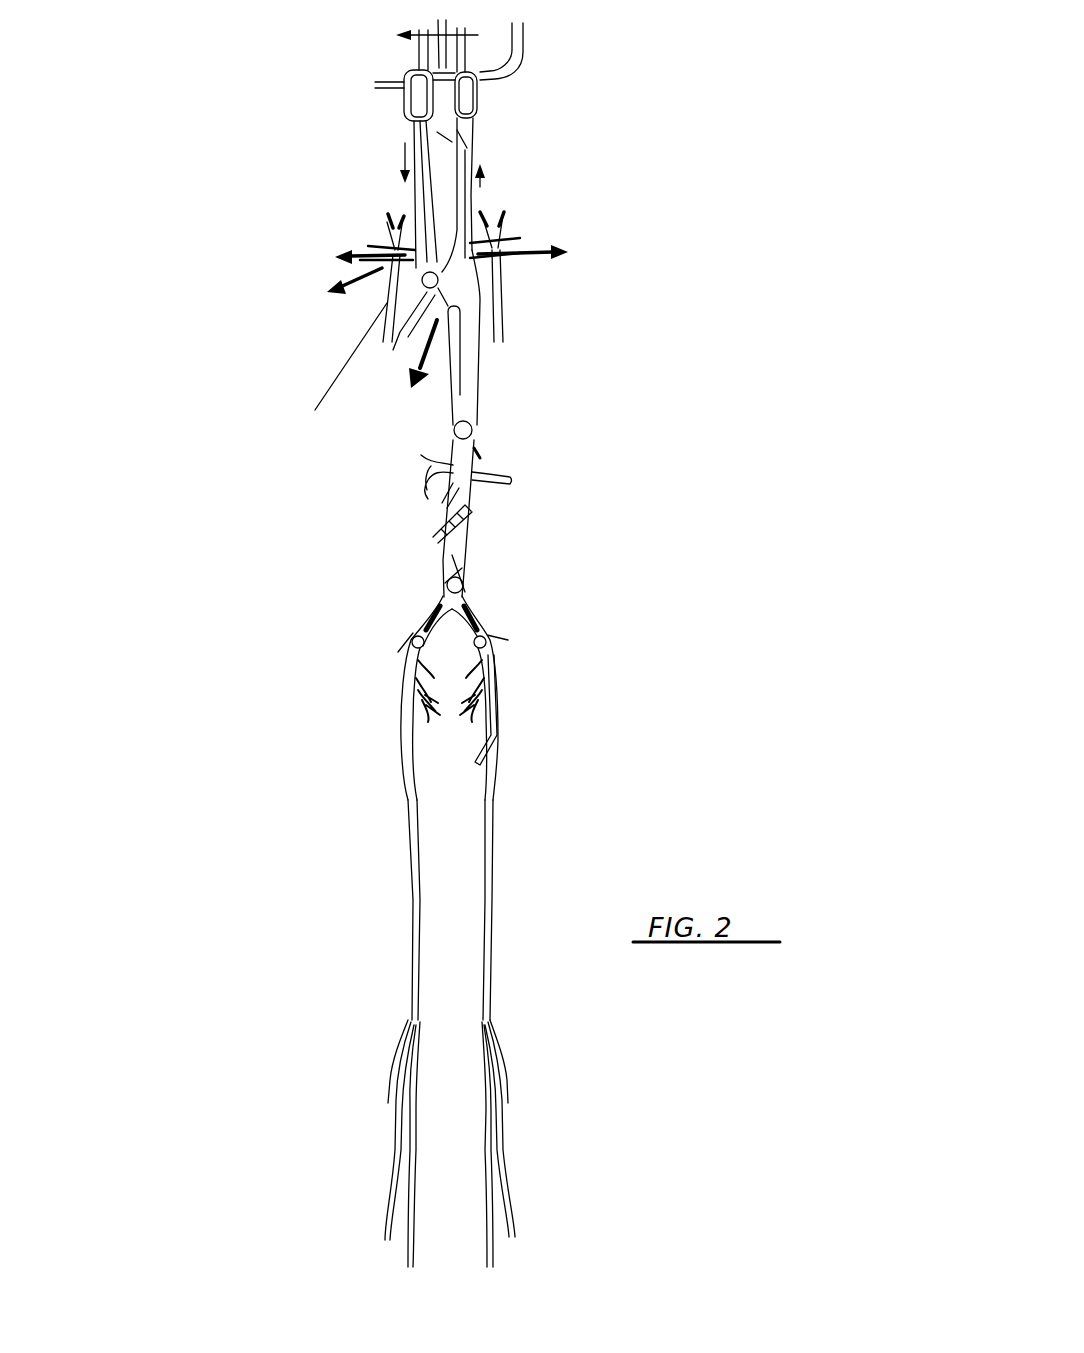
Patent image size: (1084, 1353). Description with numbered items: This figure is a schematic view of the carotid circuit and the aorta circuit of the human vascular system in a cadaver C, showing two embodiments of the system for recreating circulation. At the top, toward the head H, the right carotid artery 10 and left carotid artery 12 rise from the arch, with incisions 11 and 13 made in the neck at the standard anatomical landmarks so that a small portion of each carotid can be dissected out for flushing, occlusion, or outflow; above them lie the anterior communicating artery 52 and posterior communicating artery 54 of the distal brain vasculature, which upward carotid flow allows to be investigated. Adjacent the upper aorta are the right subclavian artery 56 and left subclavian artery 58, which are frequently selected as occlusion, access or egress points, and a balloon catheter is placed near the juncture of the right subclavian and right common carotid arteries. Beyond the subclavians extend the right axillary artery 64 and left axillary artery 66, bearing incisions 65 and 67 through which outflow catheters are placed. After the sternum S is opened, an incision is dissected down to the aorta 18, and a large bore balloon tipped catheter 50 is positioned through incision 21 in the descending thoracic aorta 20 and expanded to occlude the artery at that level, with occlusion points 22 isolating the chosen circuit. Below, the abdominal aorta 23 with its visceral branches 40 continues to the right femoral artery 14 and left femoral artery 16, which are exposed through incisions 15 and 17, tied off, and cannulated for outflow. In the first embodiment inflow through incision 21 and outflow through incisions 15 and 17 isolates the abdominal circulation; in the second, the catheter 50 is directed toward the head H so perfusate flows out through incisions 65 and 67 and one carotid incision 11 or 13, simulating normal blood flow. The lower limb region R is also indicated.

The right carotid artery 10 is at (407, 197).
The incision in the right carotid artery 11 is at (378, 272).
The left carotid artery 12 is at (478, 152).
The incision in the left carotid artery 13 is at (528, 285).
The right femoral artery 14 is at (405, 774).
The incision in the right femoral artery 15 is at (356, 675).
The left femoral artery 16 is at (498, 766).
The incision in the left femoral artery 17 is at (526, 666).
The aorta 18 is at (490, 377).
The descending thoracic aorta 20 is at (450, 458).
The incision in the descending thoracic aorta 21 is at (442, 409).
The occlusion points 22 is at (488, 430).
The abdominal aorta 23 is at (448, 558).
The visceral branches 40 is at (430, 511).
The balloon catheter 50 is at (450, 422).
The anterior communicating artery 52 is at (445, 66).
The posterior communicating artery 54 is at (477, 97).
The right subclavian artery 56 is at (377, 243).
The left subclavian artery 58 is at (497, 248).
The right axillary artery 64 is at (440, 329).
The incision in the right axillary artery 65 is at (343, 257).
The left axillary artery 66 is at (505, 305).
The incision in the left axillary artery 67 is at (524, 271).
The head H is at (532, 41).
The cadaver C is at (290, 298).
The sternum S is at (547, 461).
The renal / lower body circulation R is at (352, 943).